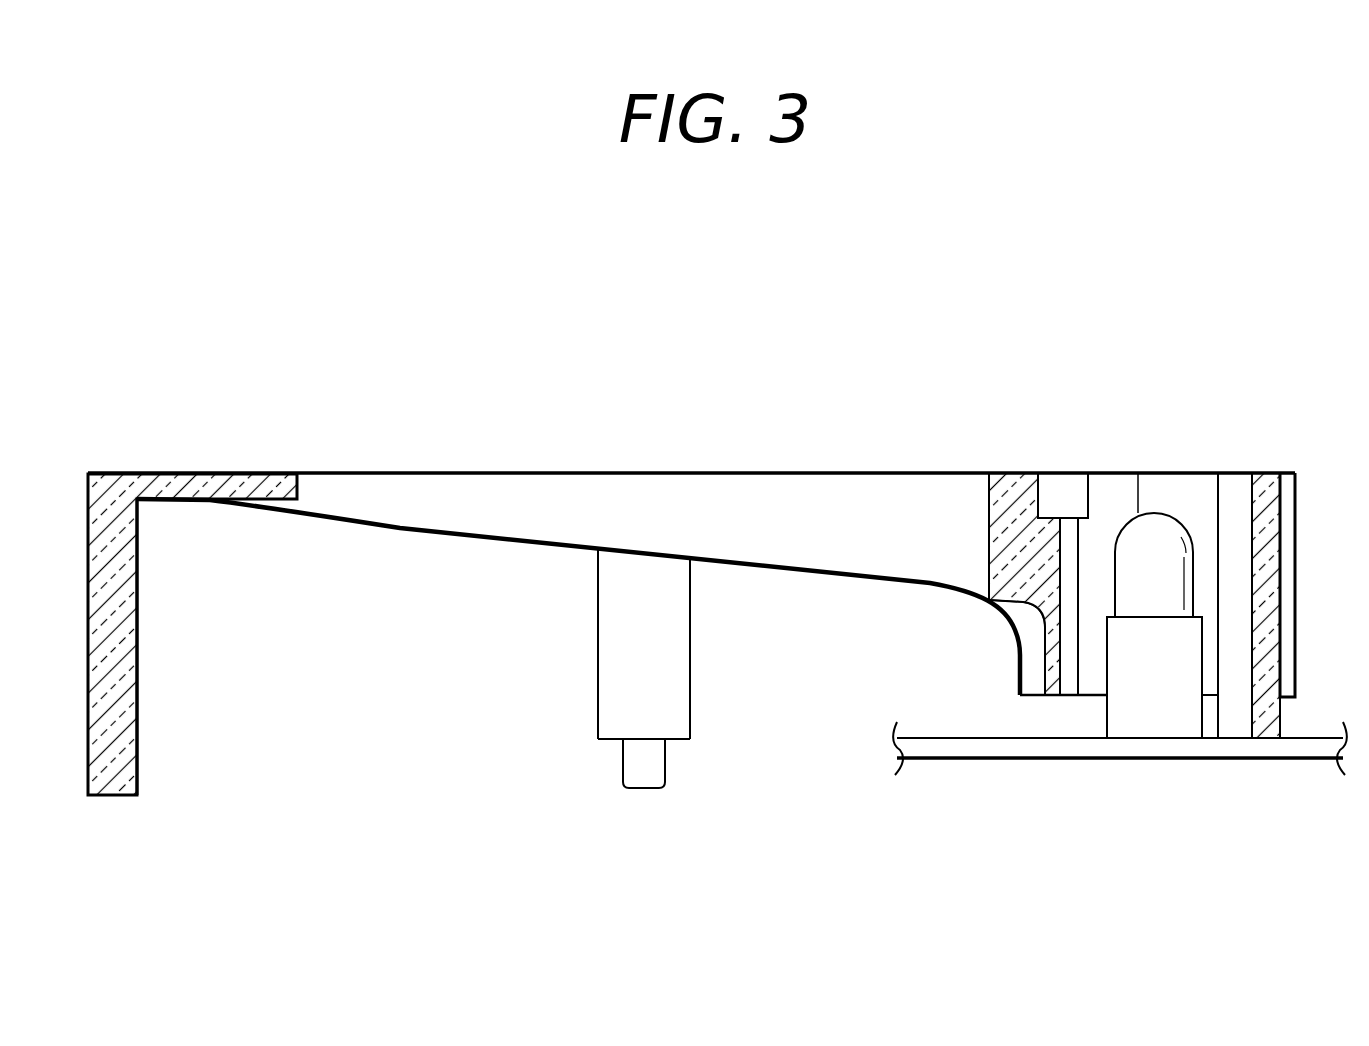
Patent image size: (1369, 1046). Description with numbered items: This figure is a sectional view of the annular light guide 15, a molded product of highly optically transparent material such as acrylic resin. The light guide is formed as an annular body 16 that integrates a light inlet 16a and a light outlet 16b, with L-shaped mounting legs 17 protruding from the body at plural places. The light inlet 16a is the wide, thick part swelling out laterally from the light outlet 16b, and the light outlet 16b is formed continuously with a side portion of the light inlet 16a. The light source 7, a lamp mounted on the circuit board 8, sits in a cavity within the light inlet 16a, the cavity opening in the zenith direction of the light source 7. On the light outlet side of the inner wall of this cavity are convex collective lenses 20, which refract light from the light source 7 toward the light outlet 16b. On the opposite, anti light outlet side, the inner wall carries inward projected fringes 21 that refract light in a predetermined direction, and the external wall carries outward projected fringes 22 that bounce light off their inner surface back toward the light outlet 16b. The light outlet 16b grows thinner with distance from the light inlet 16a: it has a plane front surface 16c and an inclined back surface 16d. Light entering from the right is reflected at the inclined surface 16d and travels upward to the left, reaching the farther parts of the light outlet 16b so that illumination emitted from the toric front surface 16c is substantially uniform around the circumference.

The annular light guide 15 is at (598, 372).
The annular body 16 is at (823, 272).
The light inlet 16a is at (1177, 473).
The light outlet 16b is at (768, 483).
The front surface 16c is at (266, 473).
The inclined surface 16d is at (428, 538).
The L-shaped mounting leg 17 is at (137, 642).
The collective lens 20 is at (1112, 475).
The inward projected fringe 21 is at (1236, 473).
The outward projected fringe 22 is at (1293, 473).
The light source 7 is at (1157, 718).
The circuit board 8 is at (985, 750).